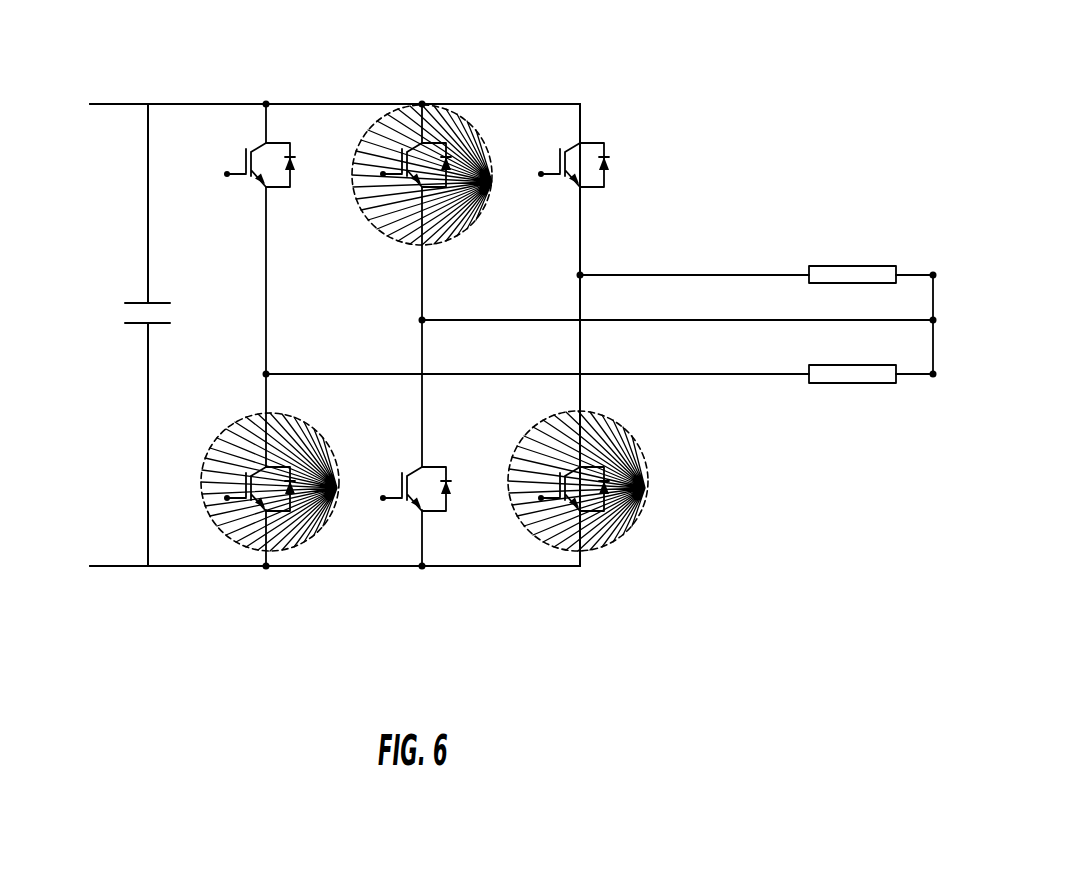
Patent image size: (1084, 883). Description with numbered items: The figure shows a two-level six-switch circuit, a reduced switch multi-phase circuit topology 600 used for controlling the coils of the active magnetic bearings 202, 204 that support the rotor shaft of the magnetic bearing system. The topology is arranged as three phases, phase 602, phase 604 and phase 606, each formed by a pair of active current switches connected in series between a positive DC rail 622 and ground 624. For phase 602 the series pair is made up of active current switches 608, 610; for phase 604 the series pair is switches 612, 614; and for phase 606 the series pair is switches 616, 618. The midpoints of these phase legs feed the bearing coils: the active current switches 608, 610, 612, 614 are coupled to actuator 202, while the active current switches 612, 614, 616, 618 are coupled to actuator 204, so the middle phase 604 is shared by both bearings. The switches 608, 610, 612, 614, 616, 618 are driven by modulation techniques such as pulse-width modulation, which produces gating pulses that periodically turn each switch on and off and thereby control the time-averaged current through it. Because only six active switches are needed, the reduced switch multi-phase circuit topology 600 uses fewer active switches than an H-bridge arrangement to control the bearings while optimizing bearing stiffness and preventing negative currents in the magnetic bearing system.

The reduced switch multi-phase circuit topology 600 is at (756, 106).
The phase 602 is at (262, 537).
The phase 604 is at (416, 533).
The phase 606 is at (574, 535).
The active current switch 608 is at (243, 153).
The active current switch 610 is at (243, 483).
The active current switch 612 is at (402, 162).
The active current switch 614 is at (402, 478).
The active current switch 616 is at (557, 153).
The active current switch 618 is at (555, 487).
The positive DC rail 622 is at (110, 104).
The ground 624 is at (120, 553).
The first active magnetic bearing 202 is at (856, 266).
The second active magnetic bearing 204 is at (846, 383).